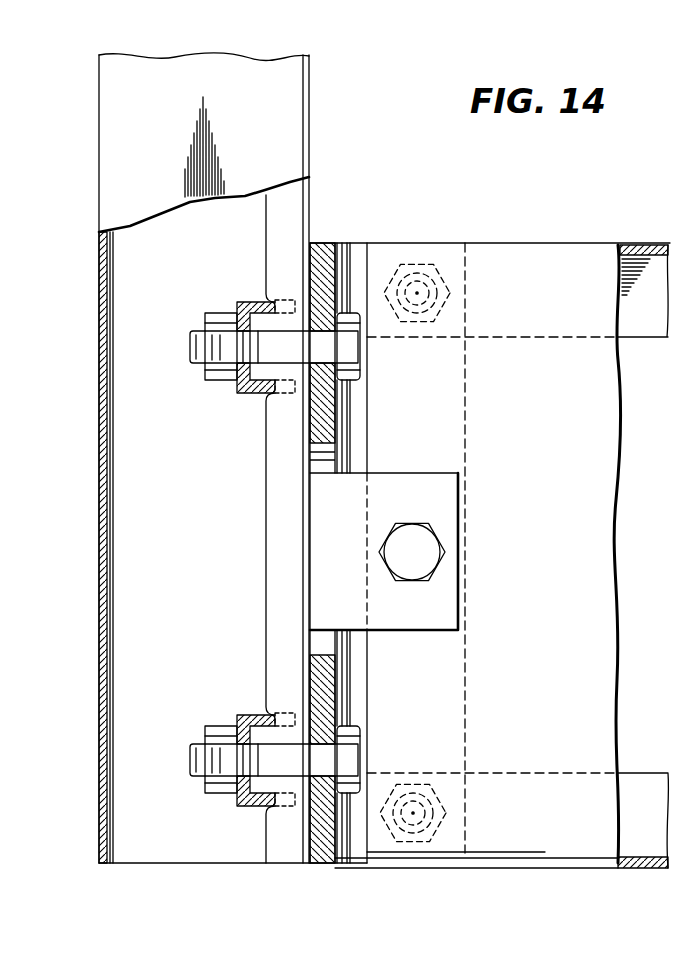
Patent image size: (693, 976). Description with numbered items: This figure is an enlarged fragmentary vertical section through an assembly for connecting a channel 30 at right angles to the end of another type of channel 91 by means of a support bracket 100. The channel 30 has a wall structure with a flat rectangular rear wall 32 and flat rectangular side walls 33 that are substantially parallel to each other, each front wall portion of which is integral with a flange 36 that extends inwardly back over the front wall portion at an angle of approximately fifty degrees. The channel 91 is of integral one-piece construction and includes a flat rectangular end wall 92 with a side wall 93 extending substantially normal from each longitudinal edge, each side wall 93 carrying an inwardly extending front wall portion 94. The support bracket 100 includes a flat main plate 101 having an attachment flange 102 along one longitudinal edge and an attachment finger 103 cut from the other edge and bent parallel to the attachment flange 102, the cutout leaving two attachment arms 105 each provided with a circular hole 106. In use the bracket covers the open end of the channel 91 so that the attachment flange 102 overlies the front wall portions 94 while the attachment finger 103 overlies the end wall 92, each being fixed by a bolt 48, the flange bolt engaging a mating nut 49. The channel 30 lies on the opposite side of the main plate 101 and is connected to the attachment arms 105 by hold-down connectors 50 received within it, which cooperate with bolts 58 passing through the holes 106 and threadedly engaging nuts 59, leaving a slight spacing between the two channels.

The channel 30 is at (90, 630).
The rear wall 32 is at (102, 487).
The side wall 33 is at (170, 78).
The flange 36 is at (266, 513).
The bolt 48 is at (415, 282).
The nut 49 is at (432, 268).
The hold-down connector 50 is at (247, 300).
The bolt 58 is at (190, 344).
The nut 59 is at (226, 378).
The channel 91 is at (611, 240).
The end wall 92 is at (605, 583).
The side wall 93 is at (651, 248).
The front wall portion 94 is at (647, 327).
The support bracket 100 is at (383, 450).
The main plate 101 is at (338, 252).
The attachment flange 102 is at (465, 702).
The attachment finger 103 is at (447, 475).
The attachment arm 105 is at (320, 417).
The circular hole 106 is at (340, 388).